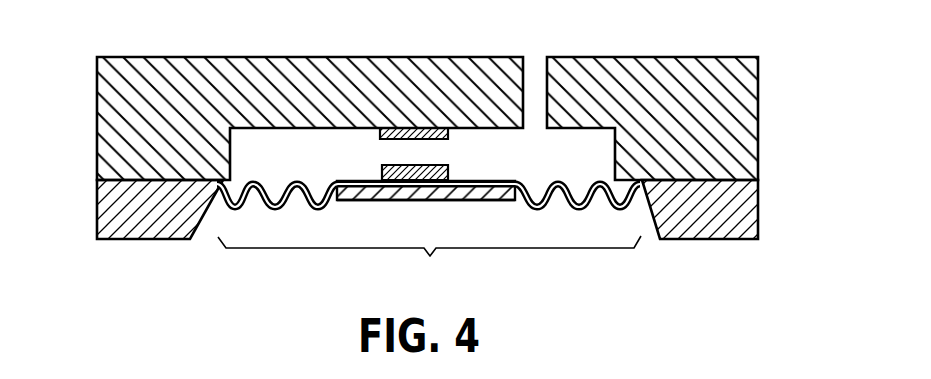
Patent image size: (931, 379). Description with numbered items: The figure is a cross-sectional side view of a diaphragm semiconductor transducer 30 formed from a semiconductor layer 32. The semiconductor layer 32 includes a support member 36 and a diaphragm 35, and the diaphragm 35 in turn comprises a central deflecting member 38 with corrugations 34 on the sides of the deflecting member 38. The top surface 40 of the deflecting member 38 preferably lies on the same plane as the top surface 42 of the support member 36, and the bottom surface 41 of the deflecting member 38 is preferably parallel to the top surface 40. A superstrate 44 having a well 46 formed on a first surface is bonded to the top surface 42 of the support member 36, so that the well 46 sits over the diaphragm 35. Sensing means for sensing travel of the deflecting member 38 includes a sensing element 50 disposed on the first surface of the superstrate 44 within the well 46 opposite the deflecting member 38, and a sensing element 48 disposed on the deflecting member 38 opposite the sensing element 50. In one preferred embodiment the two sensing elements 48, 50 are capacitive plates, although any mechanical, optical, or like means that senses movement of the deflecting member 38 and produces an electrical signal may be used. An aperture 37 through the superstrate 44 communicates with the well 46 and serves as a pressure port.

The transducer 30 is at (428, 30).
The semiconductor layer 32 is at (758, 218).
The corrugations 34 is at (252, 180).
The diaphragm 35 is at (429, 263).
The support member 36 is at (166, 224).
The aperture 37 is at (536, 74).
The deflecting member 38 is at (453, 191).
The top surface of deflecting member 40 is at (355, 178).
The bottom surface of deflecting member 41 is at (384, 203).
The top surface of support member 42 is at (122, 178).
The superstrate 44 is at (758, 95).
The well 46 is at (506, 128).
The sensing element 48 is at (421, 164).
The sensing element 50 is at (426, 124).